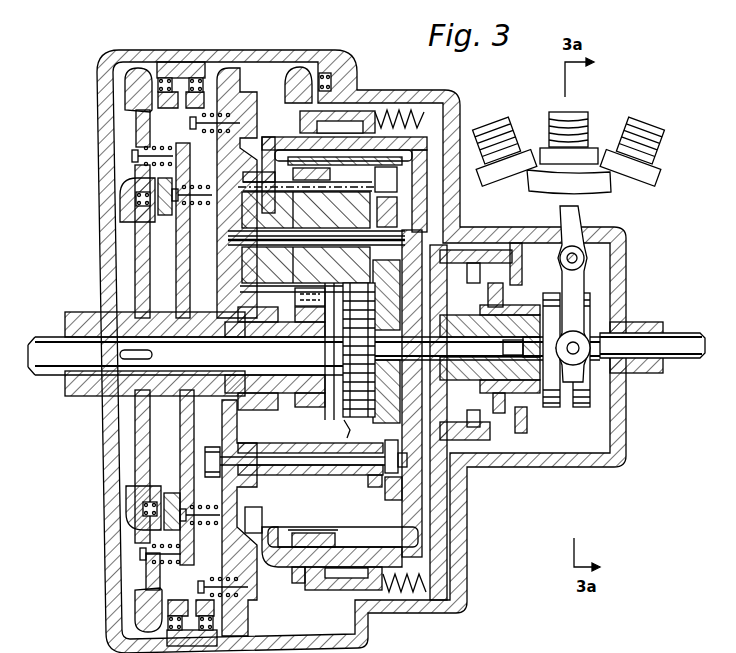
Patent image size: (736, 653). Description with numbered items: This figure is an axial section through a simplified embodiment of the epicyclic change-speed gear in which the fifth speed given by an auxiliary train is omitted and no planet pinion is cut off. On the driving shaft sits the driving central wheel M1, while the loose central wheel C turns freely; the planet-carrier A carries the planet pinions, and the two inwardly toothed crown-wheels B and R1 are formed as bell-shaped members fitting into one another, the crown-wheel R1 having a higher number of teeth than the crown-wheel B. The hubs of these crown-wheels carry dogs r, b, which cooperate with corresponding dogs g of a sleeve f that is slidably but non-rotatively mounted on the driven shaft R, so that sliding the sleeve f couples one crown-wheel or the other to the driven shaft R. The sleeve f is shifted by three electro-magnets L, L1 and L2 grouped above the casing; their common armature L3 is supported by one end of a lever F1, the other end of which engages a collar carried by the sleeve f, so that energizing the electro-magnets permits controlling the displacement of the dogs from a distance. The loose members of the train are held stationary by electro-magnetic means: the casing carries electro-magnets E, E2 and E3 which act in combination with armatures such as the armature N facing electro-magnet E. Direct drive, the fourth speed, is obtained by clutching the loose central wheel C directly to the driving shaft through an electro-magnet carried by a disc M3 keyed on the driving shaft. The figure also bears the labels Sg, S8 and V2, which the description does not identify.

The electro-magnet E is at (174, 58).
The electro-magnet E2 is at (204, 56).
The electro-magnet E3 is at (352, 58).
The armature N is at (126, 104).
The planet-carrier A is at (217, 170).
The crown-wheel B is at (278, 136).
The pin Sg is at (330, 176).
The crown-wheel R1 is at (386, 179).
The spring seat S8 is at (387, 206).
The disc M3 is at (146, 252).
The loose central wheel C is at (310, 398).
The driving central wheel M1 is at (359, 366).
The electro-magnet L is at (537, 150).
The electro-magnet L1 is at (613, 113).
The electro-magnet L2 is at (690, 175).
The armature L3 is at (610, 190).
The lever F1 is at (578, 214).
The pivot V2 is at (581, 261).
The dog r is at (471, 284).
The dog g is at (496, 283).
The dog b is at (522, 280).
The sleeve f is at (527, 424).
The driven shaft R is at (672, 332).